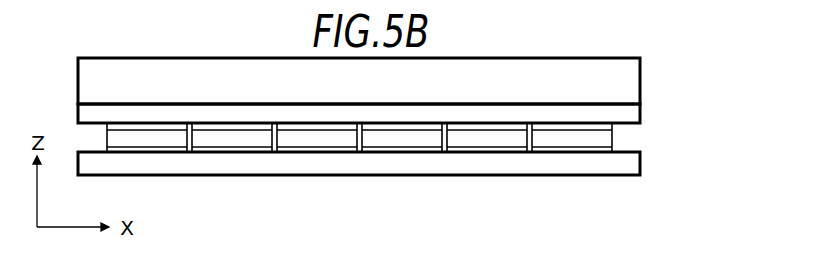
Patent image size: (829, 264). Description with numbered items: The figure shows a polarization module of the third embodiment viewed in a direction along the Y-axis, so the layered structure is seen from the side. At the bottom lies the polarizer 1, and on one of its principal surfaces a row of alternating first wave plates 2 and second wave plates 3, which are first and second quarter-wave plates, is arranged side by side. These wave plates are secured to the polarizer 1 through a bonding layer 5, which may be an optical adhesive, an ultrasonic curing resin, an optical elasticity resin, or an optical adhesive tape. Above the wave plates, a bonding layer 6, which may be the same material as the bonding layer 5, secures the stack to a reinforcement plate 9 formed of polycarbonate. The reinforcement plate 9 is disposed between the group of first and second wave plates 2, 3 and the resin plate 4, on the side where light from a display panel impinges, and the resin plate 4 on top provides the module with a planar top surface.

The polarizer 1 is at (642, 173).
The first wave plates 2 is at (235, 140).
The second wave plates 3 is at (148, 140).
The resin plate 4 is at (642, 80).
The bonding layer 5 is at (614, 150).
The bonding layer 6 is at (614, 126).
The reinforcement plate 9 is at (642, 117).